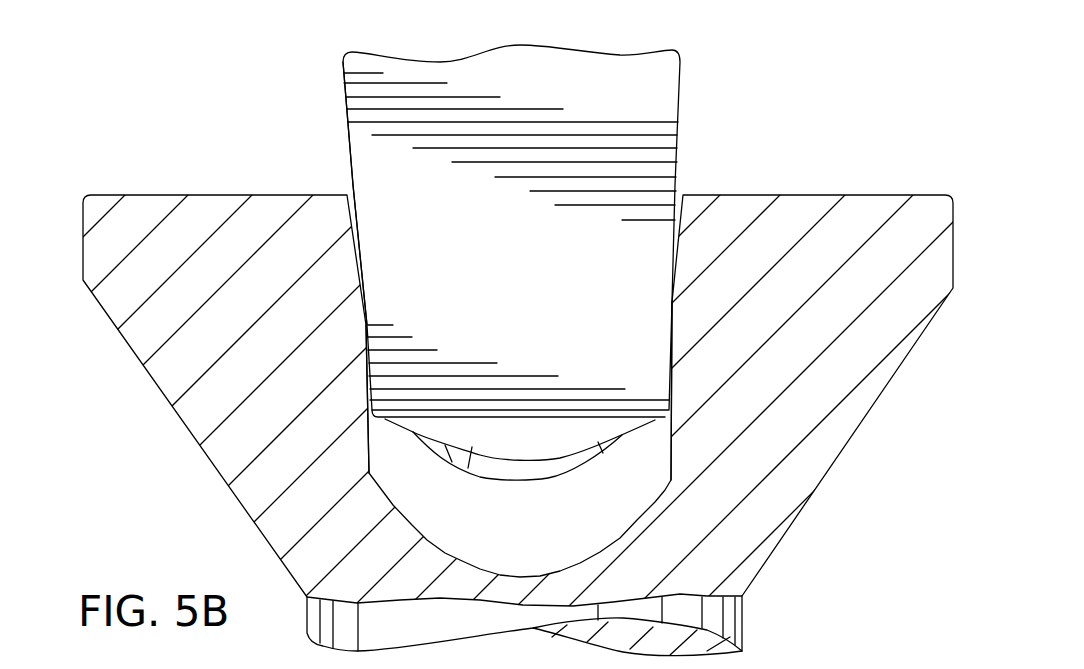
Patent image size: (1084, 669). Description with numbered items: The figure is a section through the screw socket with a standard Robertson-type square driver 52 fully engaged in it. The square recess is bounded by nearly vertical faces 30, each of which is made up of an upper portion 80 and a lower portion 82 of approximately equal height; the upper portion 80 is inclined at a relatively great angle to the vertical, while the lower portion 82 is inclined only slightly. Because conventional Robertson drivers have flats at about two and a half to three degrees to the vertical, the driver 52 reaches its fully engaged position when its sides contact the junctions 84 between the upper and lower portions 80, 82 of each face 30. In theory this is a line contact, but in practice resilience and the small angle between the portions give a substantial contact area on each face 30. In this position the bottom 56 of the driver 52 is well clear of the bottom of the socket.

The vertical faces 30 is at (360, 289).
The square driver 52 is at (532, 297).
The bottom of the driver 56 is at (468, 472).
The upper portion 80 is at (351, 232).
The lower portion 82 is at (366, 393).
The junctions 84 is at (363, 334).